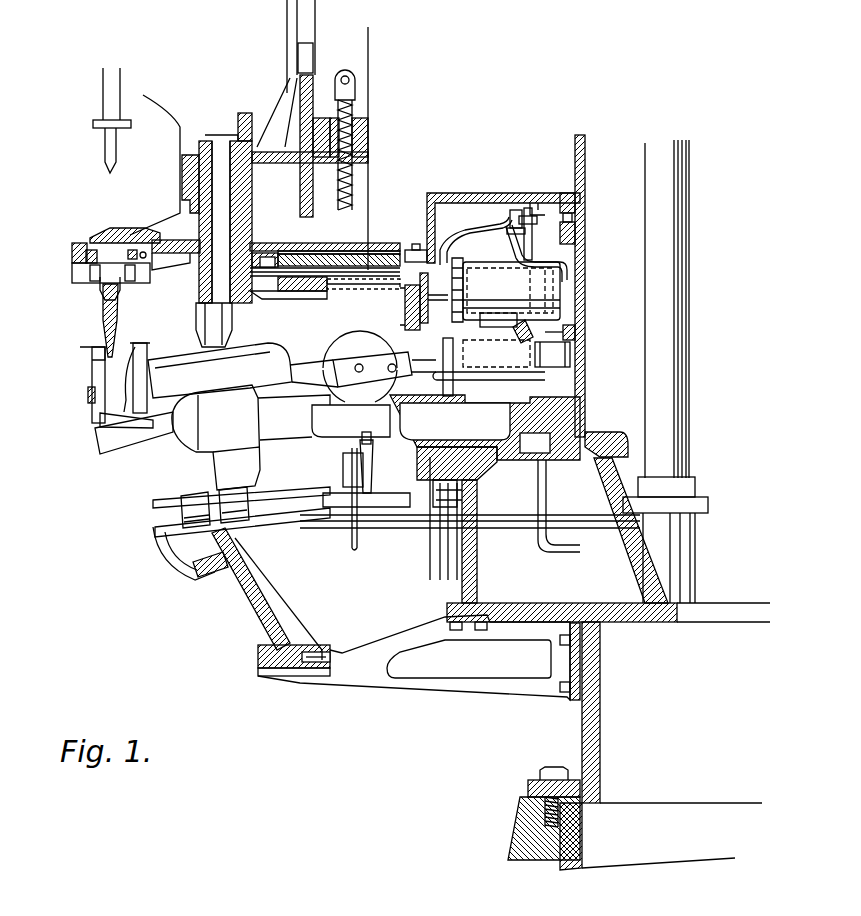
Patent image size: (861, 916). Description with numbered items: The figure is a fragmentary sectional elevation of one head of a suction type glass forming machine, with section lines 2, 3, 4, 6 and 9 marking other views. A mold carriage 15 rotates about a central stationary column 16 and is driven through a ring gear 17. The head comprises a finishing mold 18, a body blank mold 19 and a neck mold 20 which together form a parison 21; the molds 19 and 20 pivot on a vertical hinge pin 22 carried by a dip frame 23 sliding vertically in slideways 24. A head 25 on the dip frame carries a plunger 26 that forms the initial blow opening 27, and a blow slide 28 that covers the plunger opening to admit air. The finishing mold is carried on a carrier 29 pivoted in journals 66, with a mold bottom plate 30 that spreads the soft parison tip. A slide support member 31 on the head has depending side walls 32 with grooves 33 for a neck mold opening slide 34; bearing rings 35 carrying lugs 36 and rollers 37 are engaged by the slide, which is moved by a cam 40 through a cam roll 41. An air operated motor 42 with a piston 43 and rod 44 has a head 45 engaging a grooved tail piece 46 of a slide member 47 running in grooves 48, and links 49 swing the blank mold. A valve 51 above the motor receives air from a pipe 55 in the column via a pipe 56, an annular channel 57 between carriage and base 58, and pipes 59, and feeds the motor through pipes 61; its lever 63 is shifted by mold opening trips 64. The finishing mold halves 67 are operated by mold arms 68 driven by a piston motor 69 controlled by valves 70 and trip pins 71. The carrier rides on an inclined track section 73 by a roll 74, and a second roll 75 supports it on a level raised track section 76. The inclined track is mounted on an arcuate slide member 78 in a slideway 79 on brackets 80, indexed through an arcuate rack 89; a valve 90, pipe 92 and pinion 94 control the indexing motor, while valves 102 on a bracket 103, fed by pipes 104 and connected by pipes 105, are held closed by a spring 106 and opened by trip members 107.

The section line 2- 2 is at (62, 345).
The section line 3- 3 is at (62, 260).
The section line 4- 4 is at (480, 400).
The section line 6- 6 is at (162, 477).
The section line 9- 9 is at (250, 627).
The mold carriage 15 is at (318, 418).
The central stationary column 16 is at (585, 158).
The ring gear 17 is at (420, 452).
The finishing mold 18 is at (66, 398).
The body blank mold 19 is at (185, 321).
The neck mold 20 is at (56, 288).
The parison 21 is at (103, 318).
The vertical hinge pin 22 is at (218, 172).
The dip frame 23 is at (300, 112).
The slideways 24 is at (357, 53).
The head 25 is at (75, 244).
The plunger 26 is at (106, 147).
The initial blow opening 27 is at (100, 292).
The blow slide 28 is at (108, 228).
The carrier 29 is at (216, 437).
The mold bottom plate 30 is at (110, 417).
The slide support member 31 is at (375, 256).
The depending side walls 32 is at (388, 243).
The grooves 33 is at (320, 254).
The neck mold opening slide 34 is at (340, 256).
The bearing rings 35 is at (188, 266).
The lugs 36 is at (255, 252).
The rollers 37 is at (268, 267).
The cam 40 is at (433, 200).
The cam roll 41 is at (412, 250).
The air operated motor 42 is at (556, 292).
The piston 43 is at (560, 278).
The rod 44 is at (435, 290).
The head 45 is at (437, 300).
The grooved tail piece 46 is at (408, 325).
The slide member 47 is at (358, 289).
The grooves 48 is at (312, 291).
The links 49 is at (282, 299).
The valve 51 is at (510, 218).
The pipe 55 is at (682, 405).
The pipe 56 is at (548, 472).
The annular channel 57 is at (533, 453).
The base 58 is at (611, 675).
The pipes 59 is at (565, 314).
The pipes 61 is at (530, 250).
The lever 63 is at (532, 222).
The mold opening trips 64 is at (536, 198).
The journals 66 is at (316, 356).
The separable mold halves 67 is at (135, 345).
The mold arms 68 is at (220, 370).
The piston motor 69 is at (452, 352).
The valves 70 is at (560, 355).
The trip pins 71 is at (577, 330).
The inclined track section 73 is at (195, 578).
The roll 74 is at (193, 496).
The second roll 75 is at (246, 514).
The level raised track section 76 is at (283, 496).
The arcuate slide member 78 is at (258, 660).
The slideway 79 is at (270, 676).
The brackets 80 is at (425, 685).
The arcuate rack 89 is at (318, 662).
The valve 90 is at (478, 500).
The pipe 92 is at (478, 558).
The pinion 94 is at (438, 500).
The valves 102 is at (343, 466).
The bracket 103 is at (340, 500).
The pipes 104 is at (556, 518).
The pipes 105 is at (352, 548).
The spring 106 is at (372, 480).
The trip members 107 is at (364, 452).